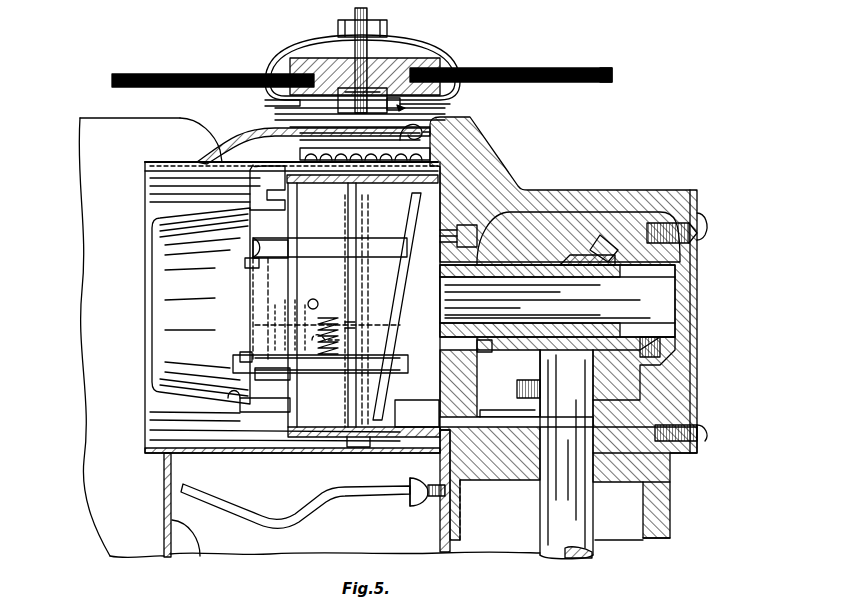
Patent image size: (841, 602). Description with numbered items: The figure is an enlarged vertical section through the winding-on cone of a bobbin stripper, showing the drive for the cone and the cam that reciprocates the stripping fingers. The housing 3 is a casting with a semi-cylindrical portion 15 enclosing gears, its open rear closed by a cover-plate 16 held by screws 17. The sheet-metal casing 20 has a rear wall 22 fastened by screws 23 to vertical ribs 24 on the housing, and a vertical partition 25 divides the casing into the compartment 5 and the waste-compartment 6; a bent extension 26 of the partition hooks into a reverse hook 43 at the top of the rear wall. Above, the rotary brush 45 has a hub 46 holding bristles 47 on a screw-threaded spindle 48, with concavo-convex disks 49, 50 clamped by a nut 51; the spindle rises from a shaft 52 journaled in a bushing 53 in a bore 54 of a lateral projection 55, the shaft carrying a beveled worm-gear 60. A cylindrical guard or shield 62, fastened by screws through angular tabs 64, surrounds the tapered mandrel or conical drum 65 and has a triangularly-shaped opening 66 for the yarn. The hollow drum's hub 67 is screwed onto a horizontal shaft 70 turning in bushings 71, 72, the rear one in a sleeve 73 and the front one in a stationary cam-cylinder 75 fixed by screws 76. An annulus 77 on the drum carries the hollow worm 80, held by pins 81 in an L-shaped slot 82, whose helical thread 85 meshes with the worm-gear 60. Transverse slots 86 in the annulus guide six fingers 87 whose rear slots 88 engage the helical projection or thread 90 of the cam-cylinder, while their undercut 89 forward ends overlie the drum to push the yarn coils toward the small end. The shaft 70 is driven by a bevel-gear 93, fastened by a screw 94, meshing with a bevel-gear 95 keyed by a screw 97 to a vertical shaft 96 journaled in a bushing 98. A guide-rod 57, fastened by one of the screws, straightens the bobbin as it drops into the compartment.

The housing 3 is at (682, 478).
The compartment 5 is at (200, 556).
The waste-compartment 6 is at (164, 520).
The semi-cylindrical portion 15 is at (670, 526).
The cover-plate 16 is at (698, 355).
The screws 17 is at (700, 220).
The casing 20 is at (73, 426).
The rear wall 22 is at (430, 546).
The screws 23 is at (408, 494).
The vertical ribs 24 is at (466, 518).
The vertical partition 25 is at (164, 492).
The extension 26 is at (186, 148).
The reverse hook 43 is at (445, 128).
The rotary brush 45 is at (550, 68).
The hub 46 is at (410, 66).
The bristles 47 is at (606, 70).
The screw-threaded spindle 48 is at (338, 50).
The concavo-convex disk 49 is at (290, 60).
The concavo-convex disk 50 is at (283, 98).
The nut 51 is at (345, 26).
The shaft 52 is at (300, 109).
The bushing 53 is at (446, 98).
The bore 54 is at (440, 106).
The lateral projection 55 is at (285, 128).
The guide-rod 57 is at (287, 506).
The beveled worm-gear 60 is at (335, 153).
The cylindrical guard or shield 62 is at (255, 448).
The angular tabs 64 is at (412, 506).
The tapered mandrel or conical drum 65 is at (170, 336).
The triangularly-shaped opening 66 is at (255, 162).
The hub 67 is at (278, 340).
The horizontal shaft 70 is at (655, 300).
The bushing 71 is at (590, 264).
The bushing 72 is at (348, 322).
The sleeve 73 is at (562, 265).
The cam-cylinder 75 is at (417, 413).
The screws 76 is at (480, 235).
The annulus 77 is at (340, 427).
The hollow worm 80 is at (318, 427).
The pins 81 is at (280, 305).
The L-shaped slot 82 is at (318, 306).
The helical thread 85 is at (372, 440).
The transverse slots 86 is at (342, 360).
The fingers 87 is at (250, 250).
The slots 88 is at (398, 322).
The undercut 89 is at (262, 268).
The helical projection or thread 90 is at (400, 310).
The bevel-gear 93 is at (632, 242).
The screw 94 is at (658, 357).
The bevel-gear 95 is at (605, 392).
The vertical shaft 96 is at (555, 527).
The screw 97 is at (517, 386).
The bushing 98 is at (593, 420).